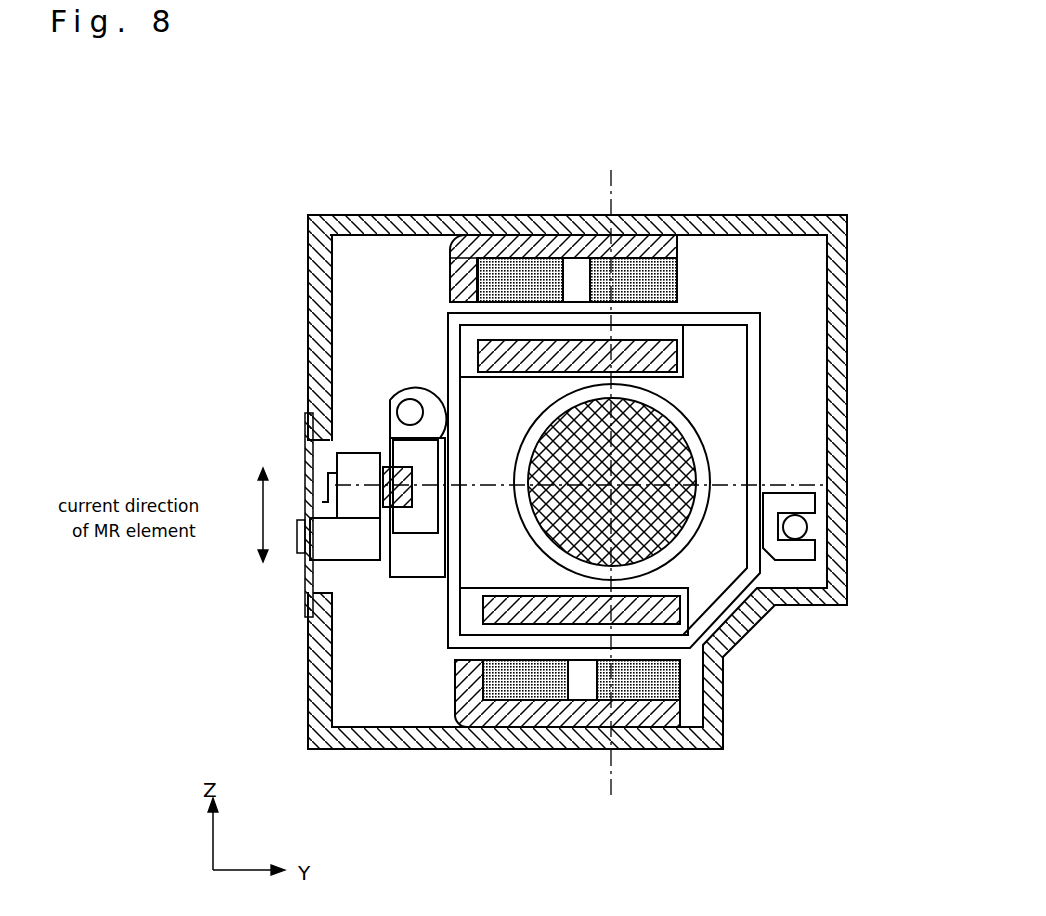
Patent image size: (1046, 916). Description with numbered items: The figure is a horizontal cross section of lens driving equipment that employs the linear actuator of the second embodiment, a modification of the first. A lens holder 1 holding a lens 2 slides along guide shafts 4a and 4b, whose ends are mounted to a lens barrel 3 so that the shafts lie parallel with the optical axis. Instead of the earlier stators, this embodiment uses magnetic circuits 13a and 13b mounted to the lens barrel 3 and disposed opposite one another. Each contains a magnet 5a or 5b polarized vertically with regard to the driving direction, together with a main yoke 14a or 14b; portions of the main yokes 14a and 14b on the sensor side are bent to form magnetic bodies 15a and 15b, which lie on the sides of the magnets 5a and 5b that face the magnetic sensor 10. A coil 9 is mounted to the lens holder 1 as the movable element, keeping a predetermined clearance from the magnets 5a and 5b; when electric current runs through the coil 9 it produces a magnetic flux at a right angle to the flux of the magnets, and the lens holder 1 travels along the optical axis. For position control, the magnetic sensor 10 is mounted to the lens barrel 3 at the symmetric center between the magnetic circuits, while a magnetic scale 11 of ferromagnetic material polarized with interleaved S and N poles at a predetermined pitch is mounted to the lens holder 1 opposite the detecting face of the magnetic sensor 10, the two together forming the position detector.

The lens holder 1 is at (437, 382).
The lens 2 is at (672, 438).
The lens barrel 3 is at (723, 700).
The guide shaft 4a is at (408, 412).
The guide shaft 4b is at (795, 527).
The magnet 5a is at (522, 290).
The magnet 5b is at (563, 692).
The coil 9 is at (758, 428).
The magnetic sensor 10 is at (350, 482).
The magnetic scale 11 is at (382, 505).
The magnetic circuit 13a is at (484, 209).
The magnetic circuit 13b is at (502, 764).
The main yoke 14a is at (493, 260).
The main yoke 14b is at (525, 705).
The magnetic body 15a is at (463, 283).
The magnetic body 15b is at (465, 702).